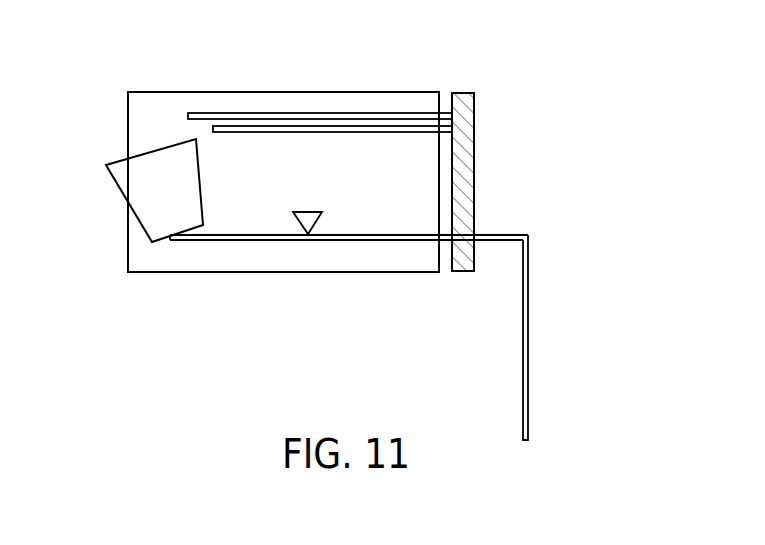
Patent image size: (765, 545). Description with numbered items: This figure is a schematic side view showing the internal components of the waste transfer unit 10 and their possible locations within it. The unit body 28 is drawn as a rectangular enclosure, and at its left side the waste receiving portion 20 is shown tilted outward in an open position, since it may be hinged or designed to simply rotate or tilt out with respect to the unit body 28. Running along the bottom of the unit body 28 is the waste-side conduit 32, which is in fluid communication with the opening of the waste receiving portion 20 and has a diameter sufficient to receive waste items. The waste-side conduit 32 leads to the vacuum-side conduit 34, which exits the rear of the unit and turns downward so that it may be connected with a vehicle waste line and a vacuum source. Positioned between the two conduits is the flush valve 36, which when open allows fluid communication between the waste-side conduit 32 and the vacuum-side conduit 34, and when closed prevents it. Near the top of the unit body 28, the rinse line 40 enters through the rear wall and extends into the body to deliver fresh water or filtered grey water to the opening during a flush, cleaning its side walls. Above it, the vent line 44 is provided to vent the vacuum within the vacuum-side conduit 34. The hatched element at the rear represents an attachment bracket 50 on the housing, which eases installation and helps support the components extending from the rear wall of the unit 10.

The waste transfer unit 10 is at (205, 82).
The waste receiving portion 20 is at (113, 183).
The unit body 28 is at (362, 171).
The waste-side conduit 32 is at (208, 243).
The vacuum-side conduit 34 is at (528, 355).
The flush valve 36 is at (312, 254).
The rinse line 40 is at (412, 133).
The vent line 44 is at (446, 112).
The attachment bracket 50 is at (453, 272).